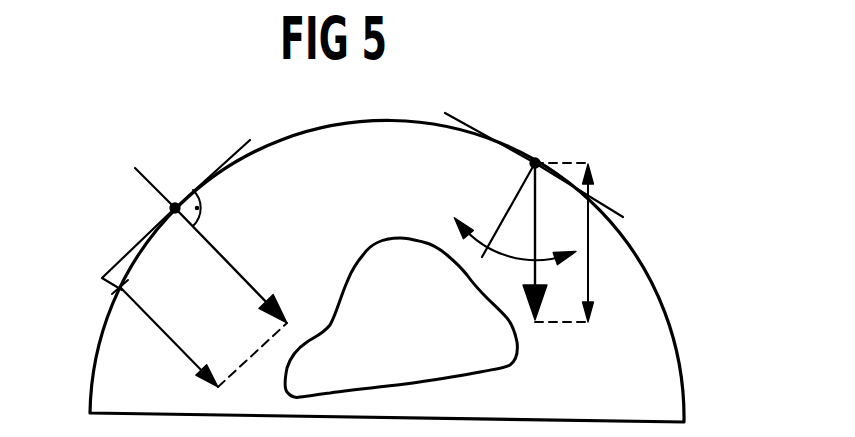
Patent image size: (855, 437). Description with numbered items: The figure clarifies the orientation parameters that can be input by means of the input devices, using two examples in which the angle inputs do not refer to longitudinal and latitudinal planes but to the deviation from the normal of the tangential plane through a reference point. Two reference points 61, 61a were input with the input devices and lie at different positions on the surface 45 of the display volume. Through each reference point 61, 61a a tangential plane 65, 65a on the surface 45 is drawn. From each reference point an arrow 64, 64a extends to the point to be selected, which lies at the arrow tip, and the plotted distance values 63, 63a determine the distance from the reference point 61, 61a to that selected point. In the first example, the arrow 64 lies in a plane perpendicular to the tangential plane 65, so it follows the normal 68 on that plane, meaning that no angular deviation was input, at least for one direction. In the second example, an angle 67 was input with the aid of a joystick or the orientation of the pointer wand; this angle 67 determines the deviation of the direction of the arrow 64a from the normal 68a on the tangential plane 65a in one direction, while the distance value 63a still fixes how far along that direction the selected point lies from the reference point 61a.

The surface 45 is at (680, 357).
The reference point 61 is at (168, 208).
The tangential plane 65 is at (222, 164).
The normal 68 is at (144, 177).
The arrow 64 is at (224, 261).
The distance value 63 is at (163, 331).
The reference point 61a is at (538, 158).
The tangential plane 65a is at (608, 207).
The normal 68a is at (512, 205).
The arrow 64a is at (513, 324).
The distance value 63a is at (588, 262).
The angle 67 is at (500, 257).